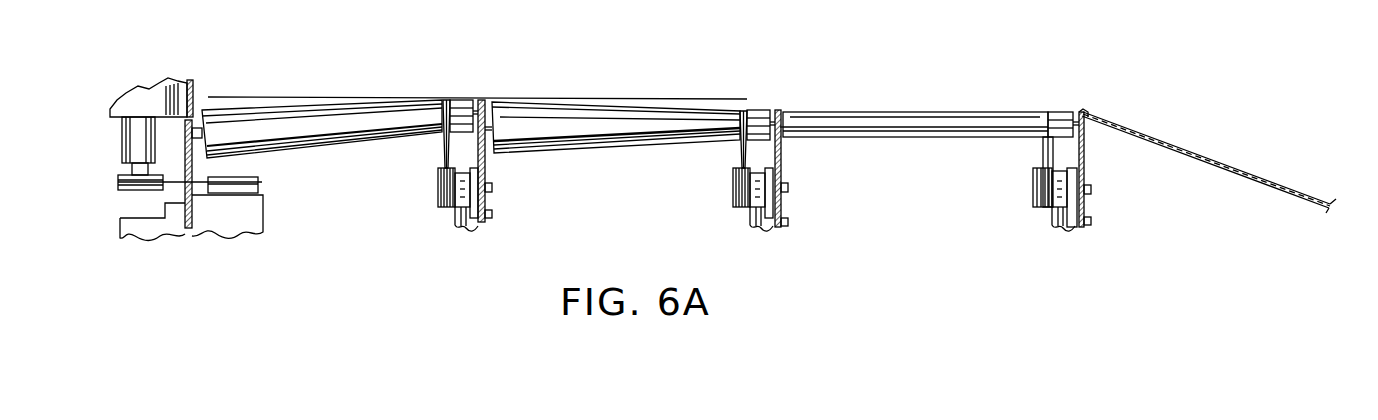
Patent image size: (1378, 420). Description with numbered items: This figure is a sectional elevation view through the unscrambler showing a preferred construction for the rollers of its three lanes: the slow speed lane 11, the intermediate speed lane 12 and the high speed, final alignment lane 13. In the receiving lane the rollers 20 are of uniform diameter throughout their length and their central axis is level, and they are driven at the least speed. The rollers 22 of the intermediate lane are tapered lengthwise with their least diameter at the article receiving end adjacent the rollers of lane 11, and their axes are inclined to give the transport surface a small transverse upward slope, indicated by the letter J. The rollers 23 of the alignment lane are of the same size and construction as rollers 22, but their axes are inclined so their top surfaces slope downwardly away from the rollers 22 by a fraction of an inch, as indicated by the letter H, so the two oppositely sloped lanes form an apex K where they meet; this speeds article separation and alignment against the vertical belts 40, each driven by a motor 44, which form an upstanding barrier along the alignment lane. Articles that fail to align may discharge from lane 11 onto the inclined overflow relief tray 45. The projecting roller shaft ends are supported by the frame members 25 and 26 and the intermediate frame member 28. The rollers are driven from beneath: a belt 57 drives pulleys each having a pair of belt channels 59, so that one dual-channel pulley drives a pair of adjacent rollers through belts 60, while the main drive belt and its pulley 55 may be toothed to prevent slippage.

The slow speed lane 11 is at (930, 162).
The intermediate speed lane 12 is at (570, 175).
The high speed, final alignment lane 13 is at (379, 166).
The rollers 20 is at (927, 112).
The rollers 22 is at (625, 148).
The rollers 23 is at (330, 147).
The frame member 25 is at (1085, 155).
The frame member 26 is at (193, 169).
The intermediate frame member 28 is at (782, 157).
The vertical belts 40 is at (153, 82).
The motor 44 is at (222, 230).
The overflow relief tray 45 is at (1192, 152).
The pulley 55 is at (158, 230).
The belt 57 is at (753, 225).
The belt channels 59 is at (442, 203).
The belts 60 is at (446, 148).
The downward slope indication H is at (220, 147).
The upward slope indication J is at (731, 143).
The apex K is at (483, 95).